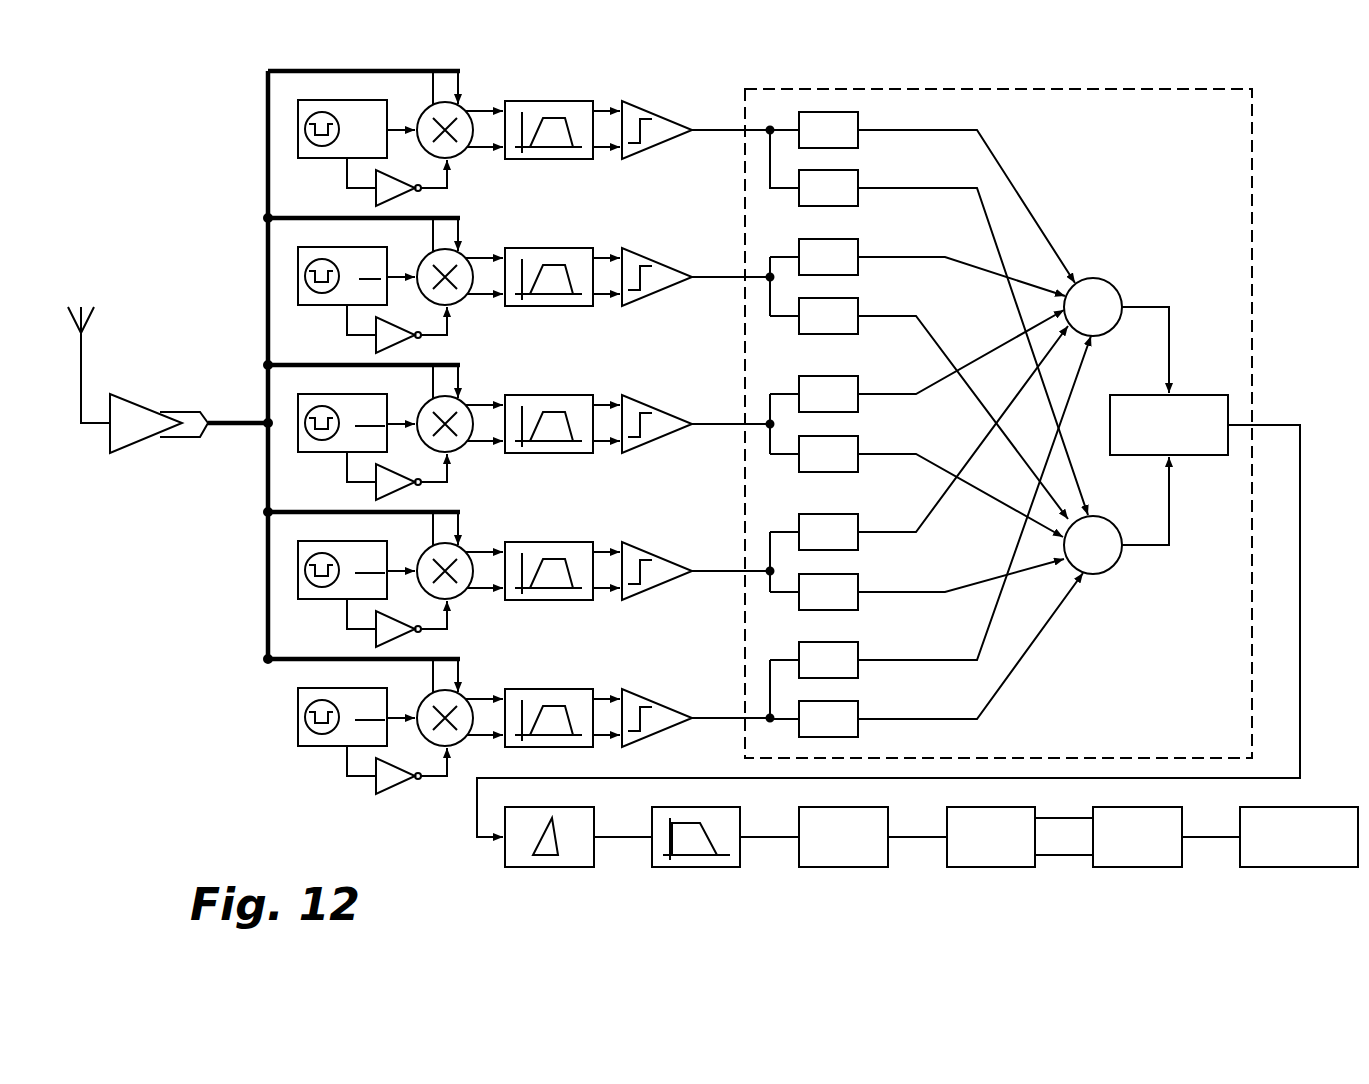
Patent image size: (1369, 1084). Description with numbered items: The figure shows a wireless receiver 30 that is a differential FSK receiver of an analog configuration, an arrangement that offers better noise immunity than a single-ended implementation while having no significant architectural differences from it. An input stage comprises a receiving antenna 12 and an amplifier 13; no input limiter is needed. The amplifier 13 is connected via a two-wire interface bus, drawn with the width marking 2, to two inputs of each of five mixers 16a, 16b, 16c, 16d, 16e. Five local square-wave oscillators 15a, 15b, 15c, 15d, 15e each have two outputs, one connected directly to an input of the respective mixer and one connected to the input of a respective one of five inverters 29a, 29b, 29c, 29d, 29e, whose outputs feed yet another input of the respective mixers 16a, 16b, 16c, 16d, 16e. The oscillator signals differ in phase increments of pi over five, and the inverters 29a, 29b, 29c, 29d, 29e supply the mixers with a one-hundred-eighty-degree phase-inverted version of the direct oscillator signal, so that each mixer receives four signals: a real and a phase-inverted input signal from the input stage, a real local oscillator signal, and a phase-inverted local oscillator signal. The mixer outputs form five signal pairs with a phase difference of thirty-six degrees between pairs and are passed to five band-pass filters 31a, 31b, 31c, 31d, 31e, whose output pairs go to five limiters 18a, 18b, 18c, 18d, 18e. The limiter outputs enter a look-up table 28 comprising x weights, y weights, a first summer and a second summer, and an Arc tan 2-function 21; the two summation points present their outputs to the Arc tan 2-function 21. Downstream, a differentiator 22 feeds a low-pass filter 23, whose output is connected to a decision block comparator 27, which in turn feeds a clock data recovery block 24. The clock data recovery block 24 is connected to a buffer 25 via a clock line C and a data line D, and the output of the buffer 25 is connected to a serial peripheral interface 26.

The receiving antenna 12 is at (97, 318).
The amplifier 13 is at (125, 447).
The differential signal bus 2 is at (223, 437).
The local square-wave oscillator 15a is at (355, 100).
The local square-wave oscillator 15b is at (355, 247).
The local square-wave oscillator 15c is at (355, 394).
The local square-wave oscillator 15d is at (355, 541).
The local square-wave oscillator 15e is at (355, 688).
The mixer 16a is at (463, 106).
The mixer 16b is at (463, 253).
The mixer 16c is at (463, 400).
The mixer 16d is at (463, 547).
The mixer 16e is at (463, 694).
The inverter 29a is at (375, 205).
The inverter 29b is at (375, 352).
The inverter 29c is at (375, 499).
The inverter 29d is at (375, 646).
The inverter 29e is at (375, 793).
The band-pass filter 31a is at (558, 100).
The band-pass filter 31b is at (558, 247).
The band-pass filter 31c is at (558, 394).
The band-pass filter 31d is at (558, 541).
The band-pass filter 31e is at (558, 688).
The limiter 18a is at (650, 101).
The limiter 18b is at (650, 248).
The limiter 18c is at (650, 395).
The limiter 18d is at (650, 542).
The limiter 18e is at (650, 689).
The look-up table 28 is at (1023, 423).
The Arc tan 2-function 21 is at (1188, 395).
The differentiator 22 is at (560, 867).
The low-pass filter 23 is at (700, 867).
The decision block comparator 27 is at (840, 867).
The clock data recovery block 24 is at (990, 867).
The buffer 25 is at (1135, 867).
The serial peripheral interface 26 is at (1300, 867).
The wireless receiver 30 is at (372, 850).
The data line D is at (1058, 818).
The clock line C is at (1070, 855).